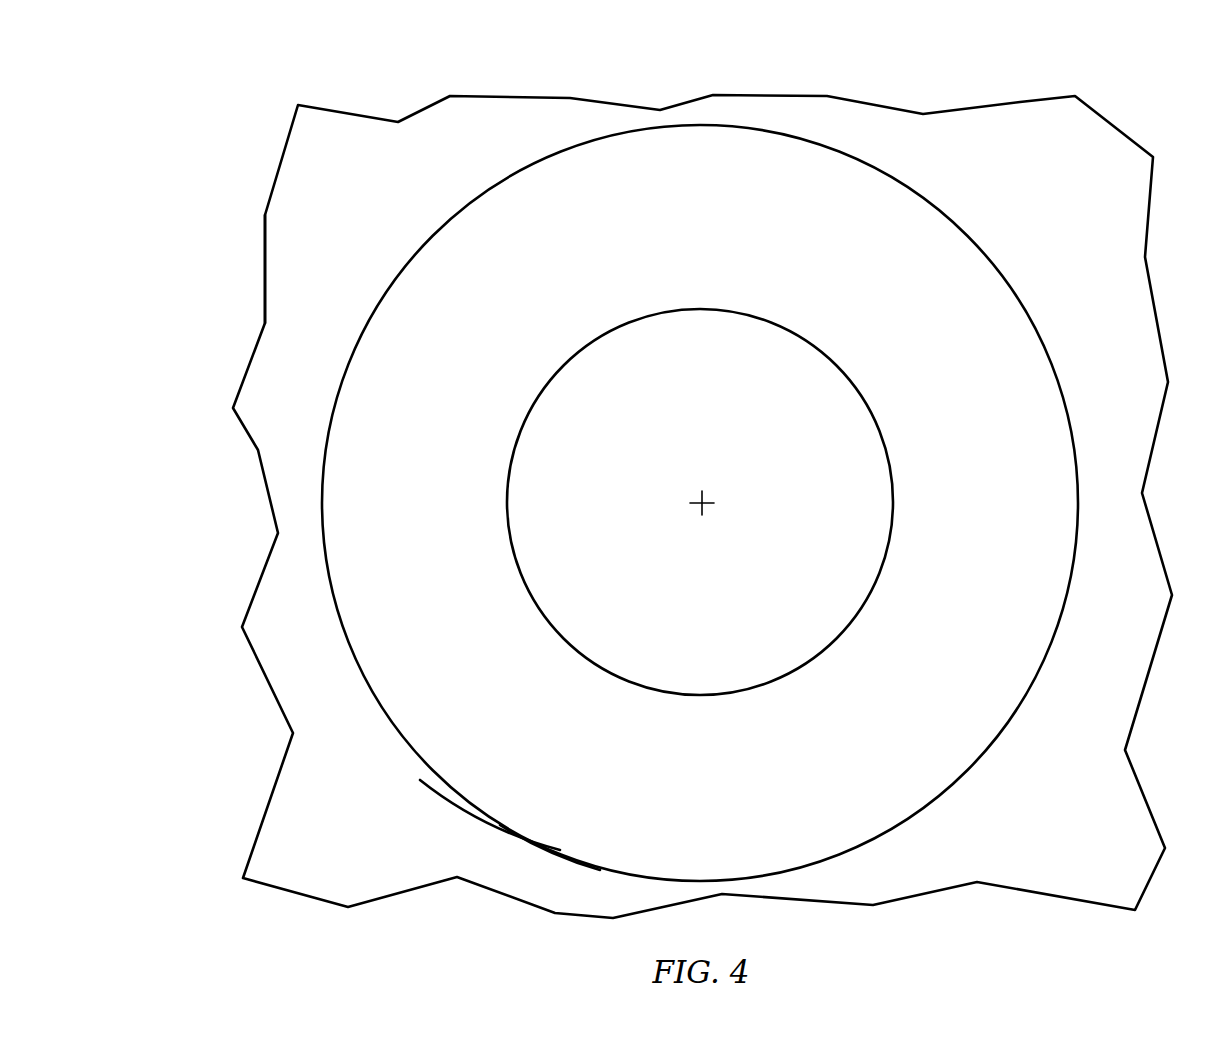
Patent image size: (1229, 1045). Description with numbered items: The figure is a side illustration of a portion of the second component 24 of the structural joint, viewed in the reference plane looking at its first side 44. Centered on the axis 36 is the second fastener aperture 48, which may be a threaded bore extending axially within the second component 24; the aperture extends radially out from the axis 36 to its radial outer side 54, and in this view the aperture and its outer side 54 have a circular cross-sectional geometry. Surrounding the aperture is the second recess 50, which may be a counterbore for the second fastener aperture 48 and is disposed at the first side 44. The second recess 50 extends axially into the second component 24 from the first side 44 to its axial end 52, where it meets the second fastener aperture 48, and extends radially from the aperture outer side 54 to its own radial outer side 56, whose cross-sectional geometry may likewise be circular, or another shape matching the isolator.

The second component 24 is at (1150, 131).
The first side 44 is at (288, 225).
The second fastener aperture 48 is at (718, 450).
The axis 36 is at (707, 508).
The second recess 50 is at (357, 595).
The axial end 52 is at (503, 786).
The radial outer side 54 is at (625, 683).
The radial outer side 56 is at (517, 831).